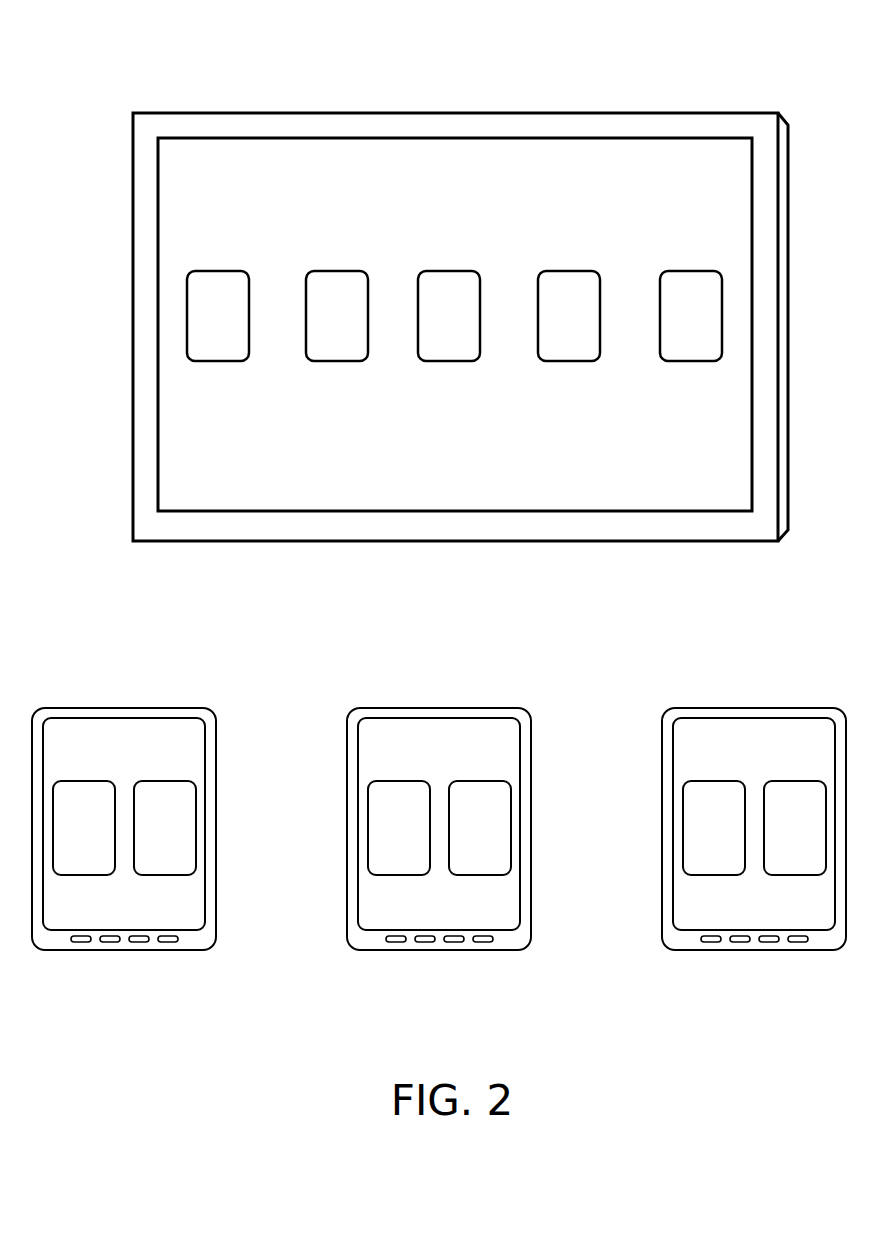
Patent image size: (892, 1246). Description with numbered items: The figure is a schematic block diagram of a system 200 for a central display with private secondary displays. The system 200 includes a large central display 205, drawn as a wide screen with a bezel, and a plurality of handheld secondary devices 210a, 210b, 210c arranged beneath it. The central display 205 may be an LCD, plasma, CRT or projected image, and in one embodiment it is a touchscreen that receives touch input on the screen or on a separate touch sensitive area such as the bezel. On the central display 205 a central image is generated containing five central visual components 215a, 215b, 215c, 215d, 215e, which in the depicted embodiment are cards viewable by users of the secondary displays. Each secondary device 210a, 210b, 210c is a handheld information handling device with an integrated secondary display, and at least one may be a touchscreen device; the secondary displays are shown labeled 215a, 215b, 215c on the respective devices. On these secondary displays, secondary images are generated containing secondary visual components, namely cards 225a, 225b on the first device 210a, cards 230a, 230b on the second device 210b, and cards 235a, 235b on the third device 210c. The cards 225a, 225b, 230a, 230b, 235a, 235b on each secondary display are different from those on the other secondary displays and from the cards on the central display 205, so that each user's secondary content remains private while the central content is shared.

The system 200 is at (123, 52).
The central display 205 is at (133, 114).
The secondary device 210a is at (124, 858).
The secondary device 210b is at (439, 858).
The secondary device 210c is at (754, 858).
The central visual component / secondary display 215a is at (157, 733).
The central visual component / secondary display 215b is at (473, 733).
The central visual component / secondary display 215c is at (788, 733).
The central visual component 215d is at (569, 316).
The central visual component 215e is at (691, 316).
The secondary visual component 225a is at (84, 828).
The secondary visual component 225b is at (165, 828).
The secondary visual component 230a is at (399, 828).
The secondary visual component 230b is at (480, 828).
The secondary visual component 235a is at (714, 828).
The secondary visual component 235b is at (795, 828).